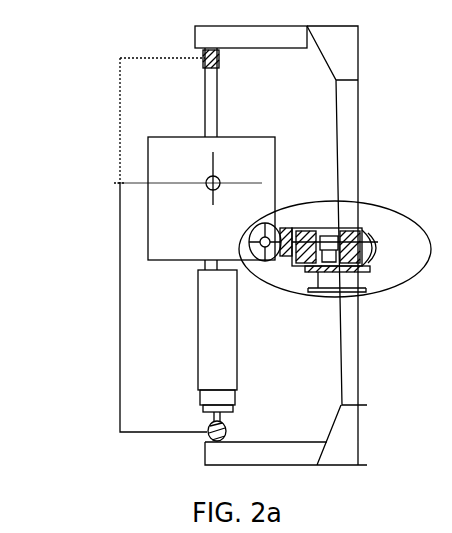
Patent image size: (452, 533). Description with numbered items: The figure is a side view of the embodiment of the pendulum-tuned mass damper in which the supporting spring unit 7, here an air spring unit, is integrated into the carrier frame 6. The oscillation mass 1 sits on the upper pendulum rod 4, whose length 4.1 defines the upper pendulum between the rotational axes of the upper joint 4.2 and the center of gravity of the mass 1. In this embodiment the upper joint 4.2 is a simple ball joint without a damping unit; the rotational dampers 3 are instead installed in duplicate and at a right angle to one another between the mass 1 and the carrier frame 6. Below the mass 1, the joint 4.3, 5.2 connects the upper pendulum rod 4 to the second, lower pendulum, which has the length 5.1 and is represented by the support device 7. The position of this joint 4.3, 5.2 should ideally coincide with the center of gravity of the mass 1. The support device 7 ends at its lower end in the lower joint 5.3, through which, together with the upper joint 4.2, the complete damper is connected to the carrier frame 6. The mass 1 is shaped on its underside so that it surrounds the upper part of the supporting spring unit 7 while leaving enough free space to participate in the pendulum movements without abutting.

The oscillation mass 1 is at (248, 155).
The rotational damper 3 is at (375, 207).
The upper pendulum rod 4 is at (212, 107).
The length of the upper pendulum rod 4.1 is at (154, 120).
The upper joint 4.2 is at (203, 57).
The joint 4.3 is at (212, 184).
The length of the lower pendulum rod 5.1 is at (155, 307).
The joint 5.2 is at (136, 192).
The lower joint 5.3 is at (208, 441).
The carrier frame 6 is at (362, 358).
The supporting spring unit 7 is at (218, 350).